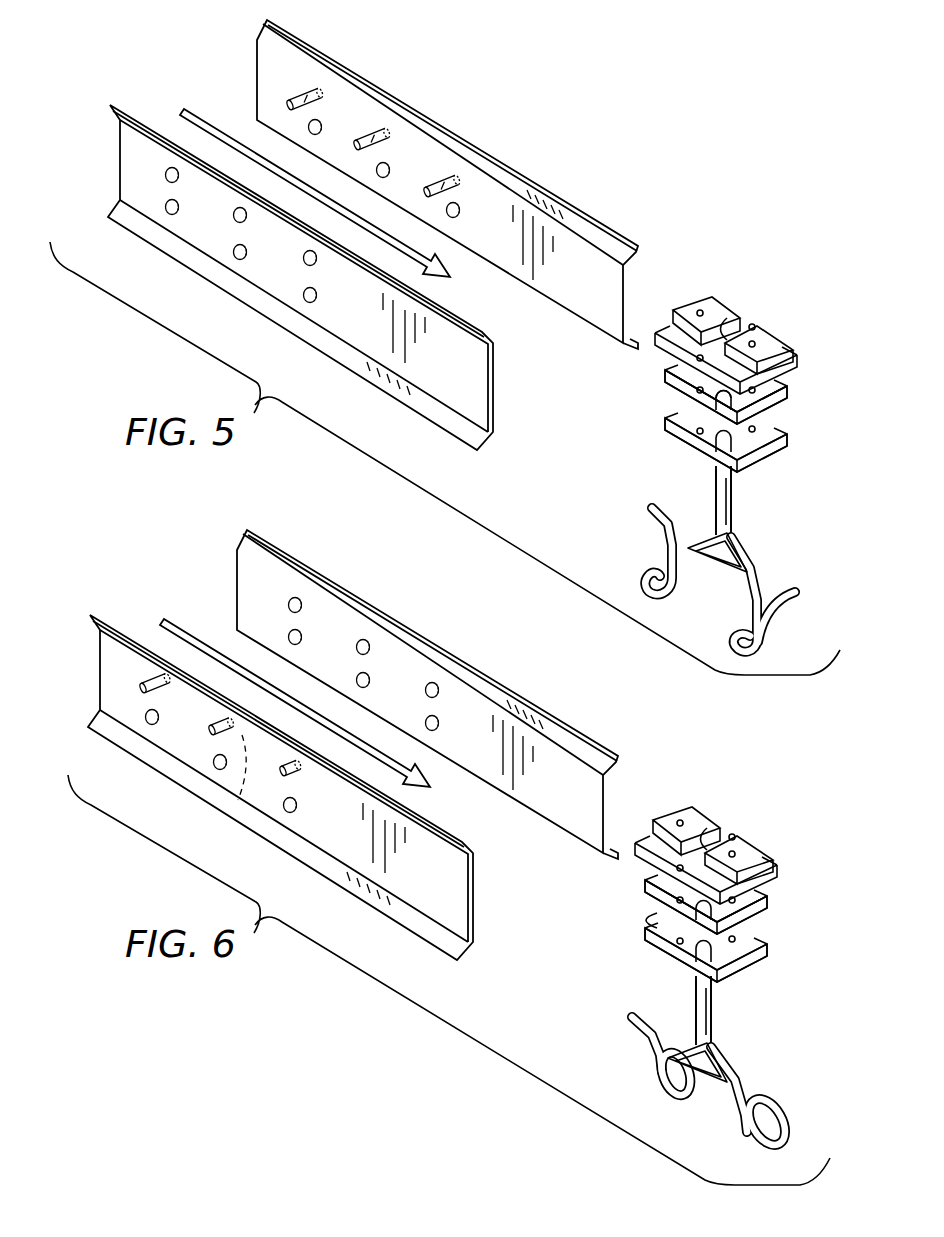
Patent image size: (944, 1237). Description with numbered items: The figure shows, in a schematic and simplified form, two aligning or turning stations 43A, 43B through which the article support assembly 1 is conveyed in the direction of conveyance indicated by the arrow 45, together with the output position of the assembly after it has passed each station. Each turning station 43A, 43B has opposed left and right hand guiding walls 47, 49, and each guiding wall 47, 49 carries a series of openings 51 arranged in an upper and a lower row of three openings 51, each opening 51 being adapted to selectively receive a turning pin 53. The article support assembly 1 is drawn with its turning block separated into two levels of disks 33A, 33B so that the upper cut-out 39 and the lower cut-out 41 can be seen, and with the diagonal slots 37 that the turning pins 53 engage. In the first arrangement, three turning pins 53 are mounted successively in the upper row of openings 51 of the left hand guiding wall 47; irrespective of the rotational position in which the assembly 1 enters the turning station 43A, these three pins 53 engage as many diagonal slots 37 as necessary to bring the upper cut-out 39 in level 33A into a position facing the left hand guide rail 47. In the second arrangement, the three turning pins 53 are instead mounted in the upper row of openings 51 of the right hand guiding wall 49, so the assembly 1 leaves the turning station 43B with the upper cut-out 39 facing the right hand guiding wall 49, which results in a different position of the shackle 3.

In FIG. 5, the article support assembly 1 is at (757, 487).
In FIG. 6, the article support assembly 1 is at (737, 997).
In FIG. 5, the shackle 3 is at (668, 548).
In FIG. 6, the shackle 3 is at (648, 1058).
In FIG. 5, the upper level disk of turning block 33A is at (787, 388).
In FIG. 6, the upper level disk of turning block 33A is at (767, 895).
In FIG. 5, the lower level disk of turning block 33B is at (787, 424).
In FIG. 6, the lower level disk of turning block 33B is at (767, 926).
In FIG. 5, the diagonal slots 37 is at (673, 377).
In FIG. 6, the diagonal slots 37 is at (760, 885).
In FIG. 5, the upper cut-out 39 is at (772, 325).
In FIG. 6, the upper cut-out 39 is at (750, 835).
In FIG. 5, the lower cut-out 41 is at (693, 417).
In FIG. 6, the lower cut-out 41 is at (723, 944).
In FIG. 5, the turning station 43A is at (613, 185).
In FIG. 6, the turning station 43B is at (626, 741).
In FIG. 5, the arrow 45 is at (213, 125).
In FIG. 6, the arrow 45 is at (195, 638).
In FIG. 5, the left hand guiding wall 47 is at (566, 289).
In FIG. 6, the left hand guiding wall 47 is at (546, 799).
In FIG. 5, the right hand guiding wall 49 is at (433, 372).
In FIG. 6, the right hand guiding wall 49 is at (413, 882).
In FIG. 5, the openings 51 is at (320, 122).
In FIG. 6, the openings 51 is at (302, 633).
In FIG. 5, the turning pins 53 is at (322, 92).
In FIG. 6, the turning pins 53 is at (140, 683).